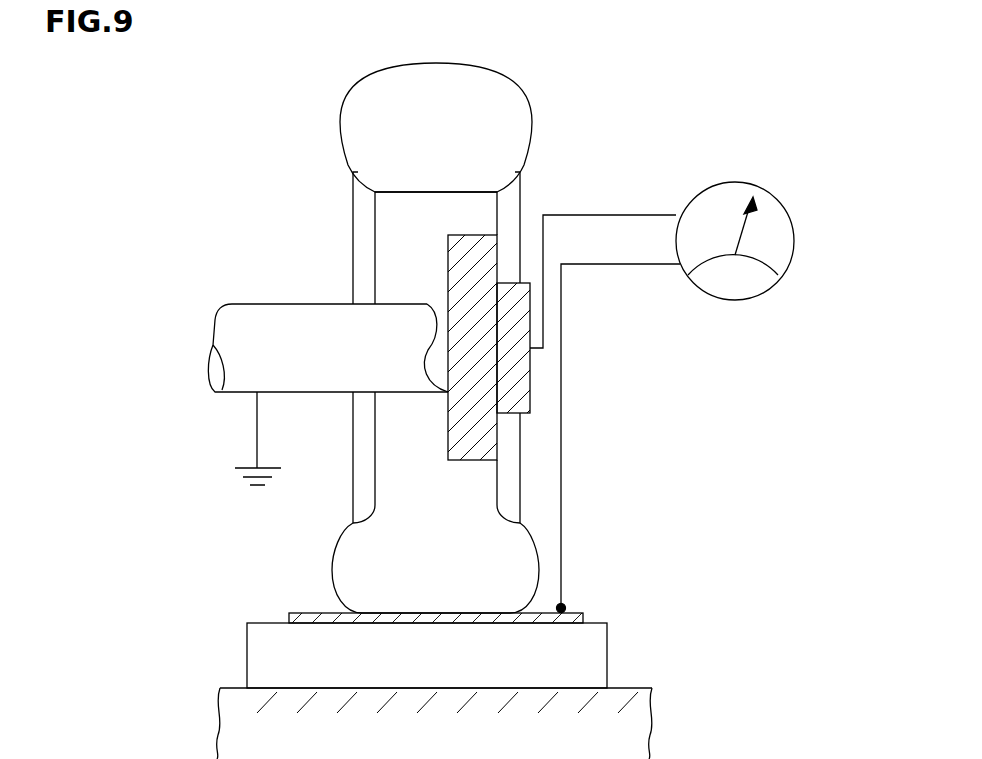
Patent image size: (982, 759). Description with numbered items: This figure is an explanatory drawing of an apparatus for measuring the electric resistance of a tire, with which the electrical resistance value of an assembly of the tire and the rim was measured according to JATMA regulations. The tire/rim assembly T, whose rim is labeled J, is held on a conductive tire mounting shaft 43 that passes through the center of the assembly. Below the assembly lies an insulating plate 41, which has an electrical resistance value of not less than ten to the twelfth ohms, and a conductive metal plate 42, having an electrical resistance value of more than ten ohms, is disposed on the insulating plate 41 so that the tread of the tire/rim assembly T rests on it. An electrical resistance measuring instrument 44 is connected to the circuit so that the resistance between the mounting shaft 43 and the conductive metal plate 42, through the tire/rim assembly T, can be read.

The tire/rim assembly T is at (505, 118).
The rim (wheel) J is at (360, 210).
The insulating plate 41 is at (270, 659).
The conductive metal plate 42 is at (323, 612).
The conductive tire mounting shaft 43 is at (278, 313).
The electrical resistance measuring instrument 44 is at (794, 222).